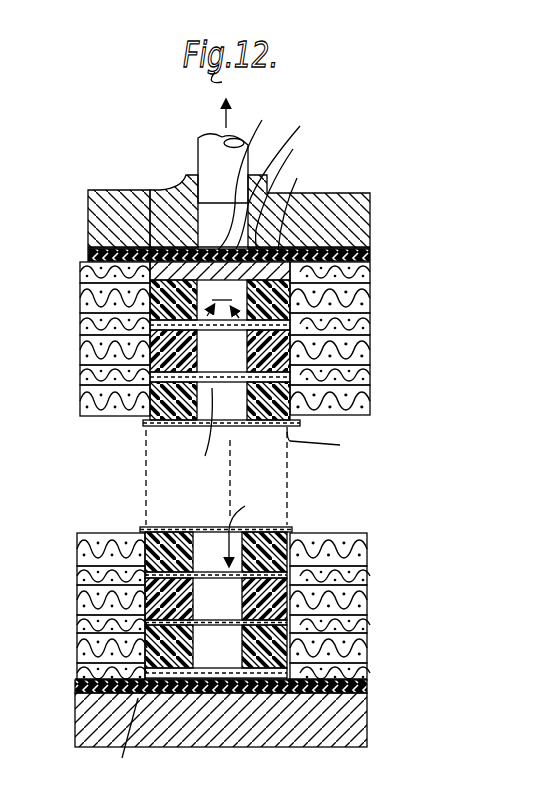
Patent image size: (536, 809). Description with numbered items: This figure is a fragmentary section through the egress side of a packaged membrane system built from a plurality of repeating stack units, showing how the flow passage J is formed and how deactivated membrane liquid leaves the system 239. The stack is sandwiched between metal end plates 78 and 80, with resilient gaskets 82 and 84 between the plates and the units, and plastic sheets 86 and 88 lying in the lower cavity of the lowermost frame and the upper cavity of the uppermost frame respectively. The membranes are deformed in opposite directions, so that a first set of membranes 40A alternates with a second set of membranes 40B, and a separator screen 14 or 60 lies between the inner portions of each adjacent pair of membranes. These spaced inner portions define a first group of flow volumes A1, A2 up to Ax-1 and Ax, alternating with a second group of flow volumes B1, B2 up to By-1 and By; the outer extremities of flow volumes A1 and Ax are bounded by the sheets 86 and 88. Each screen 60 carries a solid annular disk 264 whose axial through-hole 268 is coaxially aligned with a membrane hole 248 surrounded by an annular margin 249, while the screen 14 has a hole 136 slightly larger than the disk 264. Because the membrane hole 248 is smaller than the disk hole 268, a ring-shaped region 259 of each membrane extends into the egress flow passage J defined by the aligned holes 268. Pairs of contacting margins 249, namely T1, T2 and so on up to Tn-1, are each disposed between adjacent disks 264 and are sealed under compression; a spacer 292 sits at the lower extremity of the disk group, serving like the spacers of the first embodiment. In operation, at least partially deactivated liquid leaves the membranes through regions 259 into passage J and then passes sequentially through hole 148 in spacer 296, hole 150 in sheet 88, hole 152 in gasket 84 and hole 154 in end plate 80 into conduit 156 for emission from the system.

The conduit 156 is at (197, 142).
The hole in spacer 148 is at (253, 176).
The hole in sheet 150 is at (282, 179).
The hole in gasket 152 is at (290, 194).
The hole in end plate 154 is at (185, 176).
The hole in screen 136 is at (150, 195).
The spacer 296 is at (303, 203).
The end plate 80 is at (343, 200).
The gasket 84 is at (372, 245).
The sheet 88 is at (372, 258).
The flow volume Ax is at (80, 272).
The flow volume By is at (80, 297).
The flow volume Ax-1 is at (80, 325).
The flow volume By-1 is at (80, 350).
The separator screen 14 is at (372, 280).
The separator screen 60 is at (372, 303).
The through-hole 268 is at (238, 368).
The egress flow passage J is at (220, 296).
The first set of membranes 40A is at (96, 421).
The second region of membrane 259 is at (192, 432).
The through-hole in membrane 248 is at (212, 527).
The pair of contacting membrane margins Tn-1 is at (231, 390).
The annular membrane margin 249 is at (268, 522).
The solid annular disk 264 is at (152, 426).
The second set of membranes 40B is at (98, 528).
The pair of contacting membrane margins T2 is at (246, 530).
The flow volume B2 is at (77, 593).
The flow volume A2 is at (77, 622).
The flow volume B1 is at (77, 642).
The flow volume A1 is at (77, 668).
The sheet 86 is at (75, 683).
The gasket 82 is at (368, 689).
The end plate 78 is at (75, 727).
The spacer 292 is at (125, 740).
The press assembly 239 is at (279, 756).
The pair of contacting membrane margins T1 is at (216, 646).